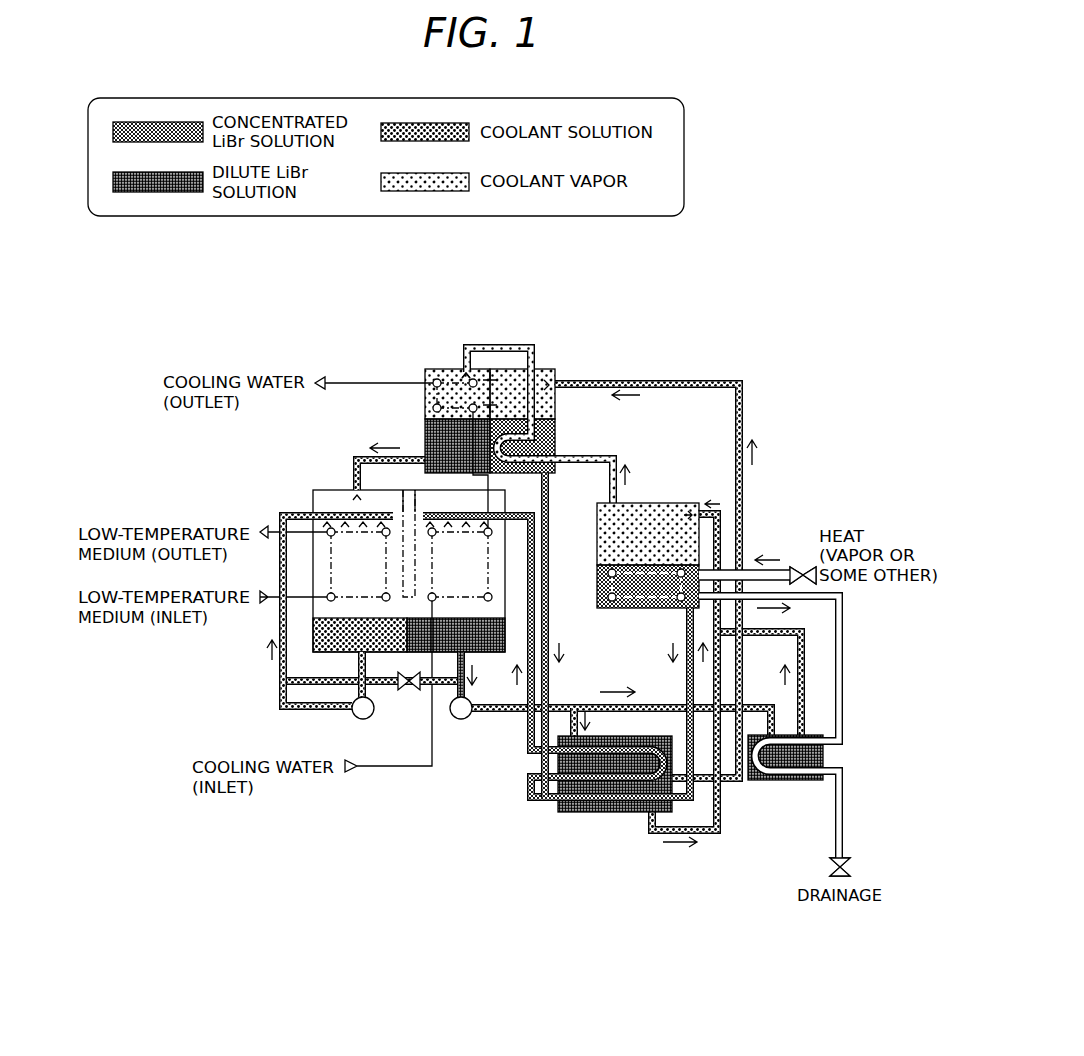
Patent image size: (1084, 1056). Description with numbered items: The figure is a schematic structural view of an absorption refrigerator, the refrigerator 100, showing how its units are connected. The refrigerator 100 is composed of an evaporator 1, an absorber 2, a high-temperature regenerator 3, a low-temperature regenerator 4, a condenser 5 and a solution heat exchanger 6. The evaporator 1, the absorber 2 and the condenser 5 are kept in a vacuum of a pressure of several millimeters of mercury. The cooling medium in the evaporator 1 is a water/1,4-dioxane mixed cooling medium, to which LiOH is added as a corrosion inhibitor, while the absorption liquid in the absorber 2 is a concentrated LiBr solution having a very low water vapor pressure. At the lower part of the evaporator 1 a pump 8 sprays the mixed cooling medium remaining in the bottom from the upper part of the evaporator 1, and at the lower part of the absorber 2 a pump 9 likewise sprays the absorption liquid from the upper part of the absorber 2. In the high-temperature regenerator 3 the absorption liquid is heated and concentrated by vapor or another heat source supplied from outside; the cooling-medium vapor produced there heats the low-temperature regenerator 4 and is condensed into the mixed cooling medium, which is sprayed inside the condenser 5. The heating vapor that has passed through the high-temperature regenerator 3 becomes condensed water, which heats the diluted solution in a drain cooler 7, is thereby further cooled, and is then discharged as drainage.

The evaporator 1 is at (346, 570).
The absorber 2 is at (478, 568).
The high-temperature regenerator 3 is at (670, 515).
The low-temperature regenerator 4 is at (512, 385).
The condenser 5 is at (452, 392).
The solution heat exchanger 6 is at (598, 813).
The drain cooler 7 is at (788, 781).
The pump 8 is at (352, 717).
The pump 9 is at (458, 722).
The refrigerator 100 is at (695, 300).